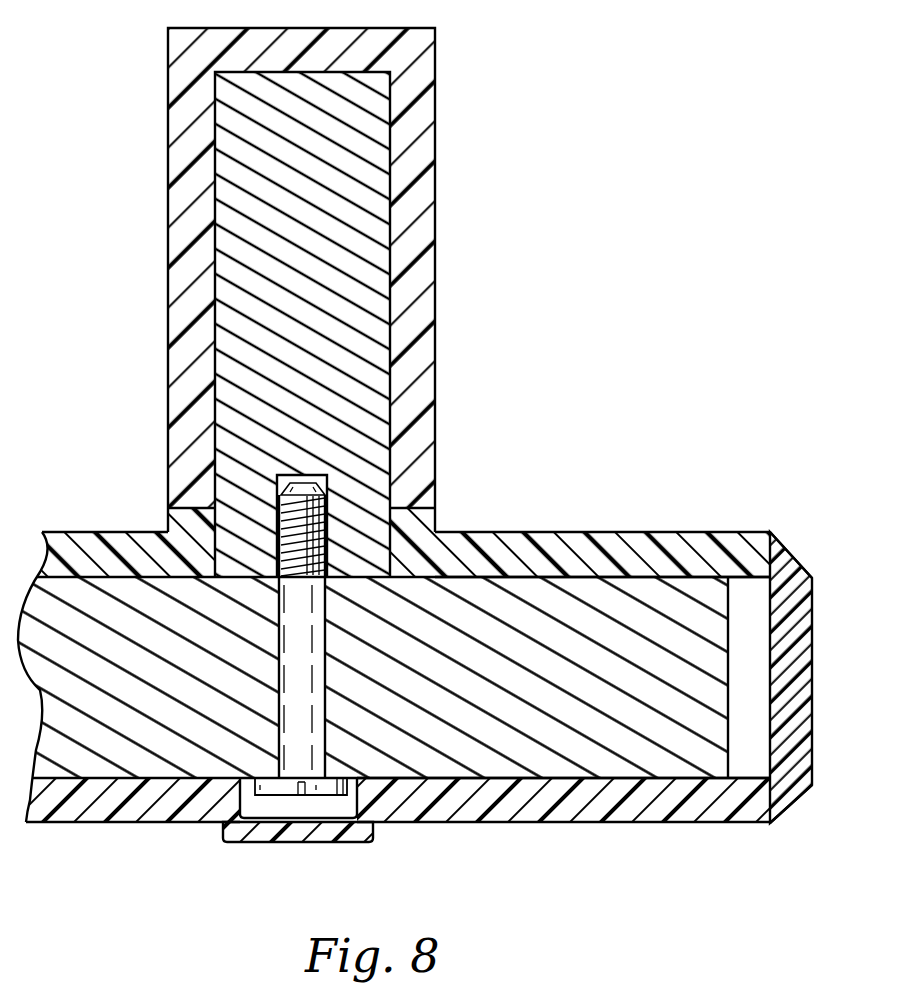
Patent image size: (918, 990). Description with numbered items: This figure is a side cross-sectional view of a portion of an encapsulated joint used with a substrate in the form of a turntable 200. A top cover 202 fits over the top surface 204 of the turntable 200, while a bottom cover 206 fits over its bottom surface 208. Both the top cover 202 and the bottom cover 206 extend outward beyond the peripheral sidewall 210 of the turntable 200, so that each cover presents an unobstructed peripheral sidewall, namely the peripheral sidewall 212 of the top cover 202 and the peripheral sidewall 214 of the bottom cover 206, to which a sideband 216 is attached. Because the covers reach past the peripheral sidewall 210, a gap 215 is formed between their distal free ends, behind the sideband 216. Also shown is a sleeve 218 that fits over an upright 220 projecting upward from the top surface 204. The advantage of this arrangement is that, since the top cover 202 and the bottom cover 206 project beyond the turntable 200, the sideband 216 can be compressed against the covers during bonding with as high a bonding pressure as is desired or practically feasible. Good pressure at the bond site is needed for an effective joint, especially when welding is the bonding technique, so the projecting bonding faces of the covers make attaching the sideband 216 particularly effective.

The turntable 200 is at (212, 737).
The top cover 202 is at (542, 543).
The top surface 204 is at (632, 577).
The bottom cover 206 is at (583, 815).
The bottom surface 208 is at (465, 780).
The peripheral sidewall 210 is at (730, 737).
The peripheral sidewall of top cover 212 is at (772, 563).
The peripheral sidewall of bottom cover 214 is at (770, 795).
The gap 215 is at (752, 687).
The sideband 216 is at (797, 750).
The sleeve 218 is at (178, 329).
The upright 220 is at (370, 253).